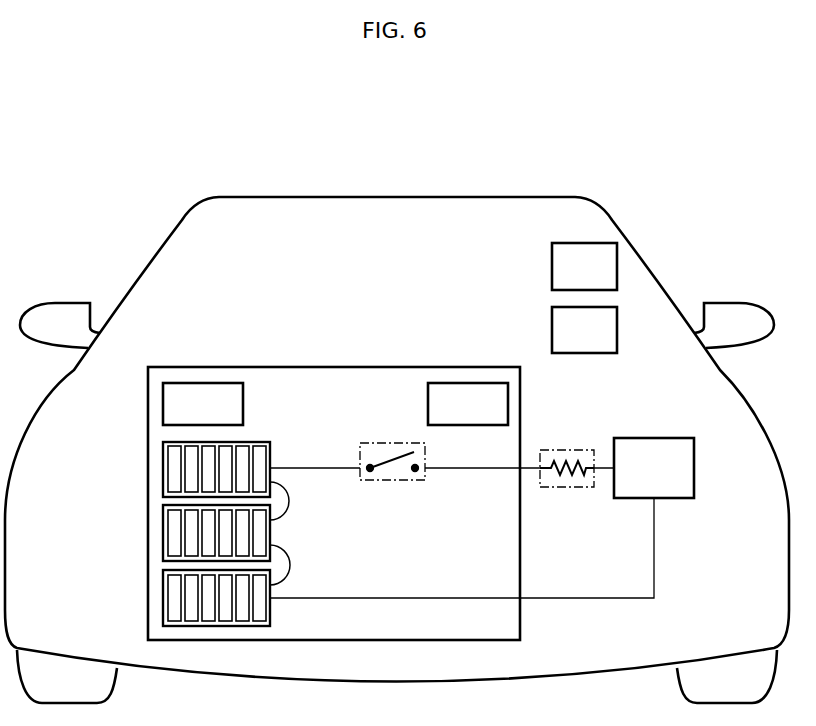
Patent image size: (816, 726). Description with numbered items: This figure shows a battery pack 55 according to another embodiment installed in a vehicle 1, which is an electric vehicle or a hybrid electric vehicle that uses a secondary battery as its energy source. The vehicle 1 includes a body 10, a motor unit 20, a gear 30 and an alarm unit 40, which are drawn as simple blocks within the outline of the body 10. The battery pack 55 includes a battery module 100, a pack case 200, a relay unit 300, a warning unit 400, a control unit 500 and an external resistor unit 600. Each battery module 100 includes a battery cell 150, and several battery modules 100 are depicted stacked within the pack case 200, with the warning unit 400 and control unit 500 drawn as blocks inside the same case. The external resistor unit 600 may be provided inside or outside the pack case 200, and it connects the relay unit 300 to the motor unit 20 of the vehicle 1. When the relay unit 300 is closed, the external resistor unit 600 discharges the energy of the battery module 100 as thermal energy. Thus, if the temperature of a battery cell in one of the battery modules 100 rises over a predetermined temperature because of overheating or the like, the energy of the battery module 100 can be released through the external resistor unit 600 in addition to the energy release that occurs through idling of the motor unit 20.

The vehicle 1 is at (167, 155).
The body 10 is at (518, 196).
The motor unit 20 is at (667, 438).
The gear 30 is at (552, 328).
The alarm unit 40 is at (552, 267).
The battery pack 55 is at (366, 350).
The battery module 100 is at (152, 526).
The battery cell 150 is at (173, 549).
The pack case 200 is at (312, 367).
The relay unit 300 is at (392, 443).
The warning unit 400 is at (465, 383).
The control unit 500 is at (201, 383).
The external resistor unit 600 is at (567, 450).